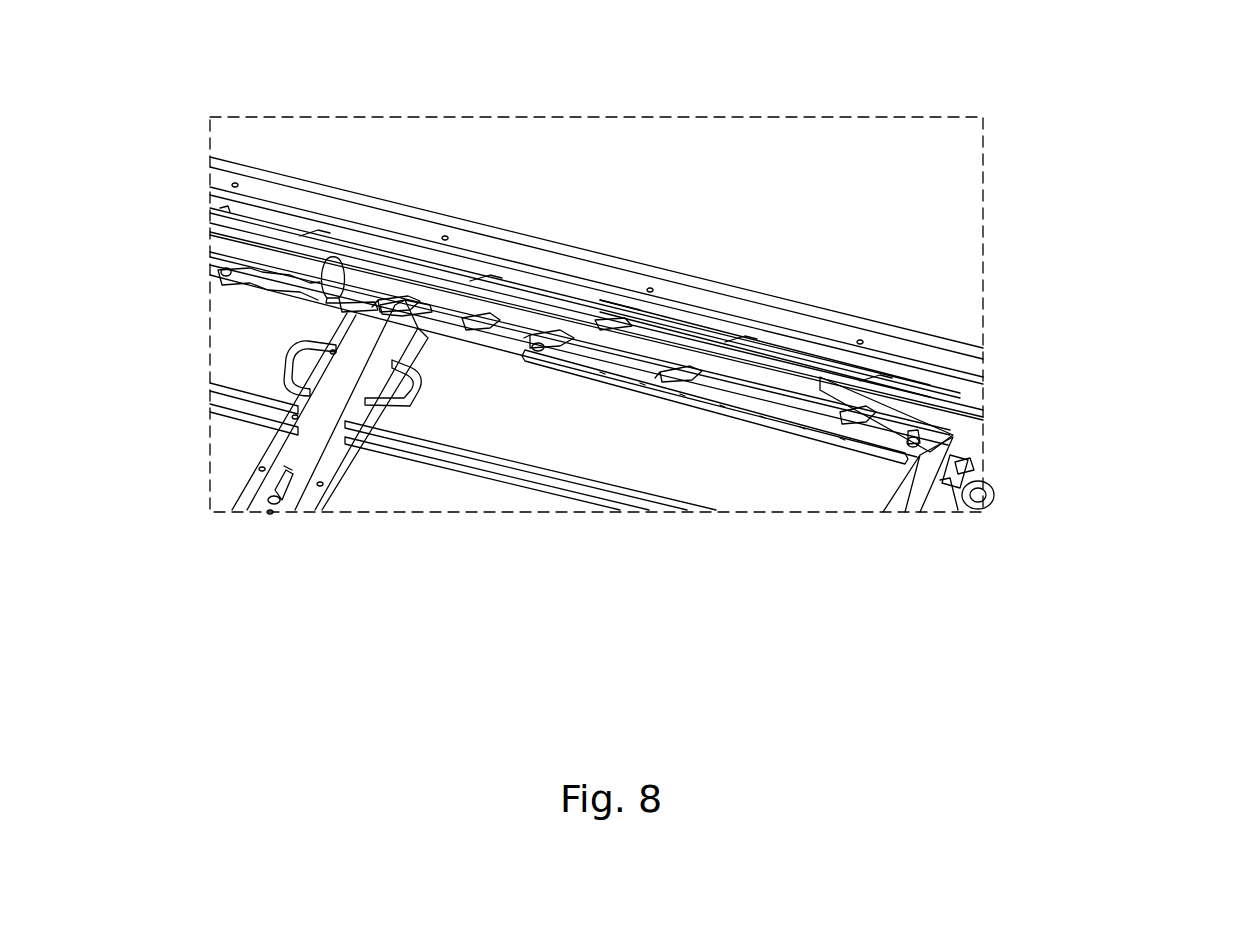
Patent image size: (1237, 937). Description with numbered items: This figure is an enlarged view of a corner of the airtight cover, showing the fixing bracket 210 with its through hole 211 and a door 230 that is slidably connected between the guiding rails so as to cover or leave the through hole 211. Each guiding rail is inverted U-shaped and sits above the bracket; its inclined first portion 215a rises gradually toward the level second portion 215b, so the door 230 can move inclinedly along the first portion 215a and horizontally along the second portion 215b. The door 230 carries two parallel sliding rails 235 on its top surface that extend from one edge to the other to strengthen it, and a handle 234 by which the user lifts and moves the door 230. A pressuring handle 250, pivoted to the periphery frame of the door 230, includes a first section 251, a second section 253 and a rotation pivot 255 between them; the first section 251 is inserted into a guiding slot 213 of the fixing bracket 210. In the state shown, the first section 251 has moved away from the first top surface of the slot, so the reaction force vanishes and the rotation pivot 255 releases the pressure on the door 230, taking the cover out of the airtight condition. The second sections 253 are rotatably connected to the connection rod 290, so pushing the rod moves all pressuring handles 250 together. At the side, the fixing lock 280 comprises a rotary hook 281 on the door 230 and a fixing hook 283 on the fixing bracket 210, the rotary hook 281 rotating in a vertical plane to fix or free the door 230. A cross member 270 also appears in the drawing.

The fixing bracket 210 is at (928, 322).
The through hole 211 is at (838, 480).
The guiding slot 213 is at (390, 300).
The first portion 215a is at (892, 404).
The second portion 215b is at (790, 370).
The door 230 is at (936, 455).
The handle 234 is at (287, 371).
The sliding rail 235 is at (520, 470).
The pressuring handle 250 is at (597, 72).
The first section 251 is at (480, 322).
The second section 253 is at (548, 337).
The rotation pivot 255 is at (508, 322).
The cross beam 270 is at (348, 383).
The fixing lock 280 is at (1130, 470).
The rotary hook 281 is at (966, 465).
The fixing hook 283 is at (968, 490).
The connection rod 290 is at (767, 418).